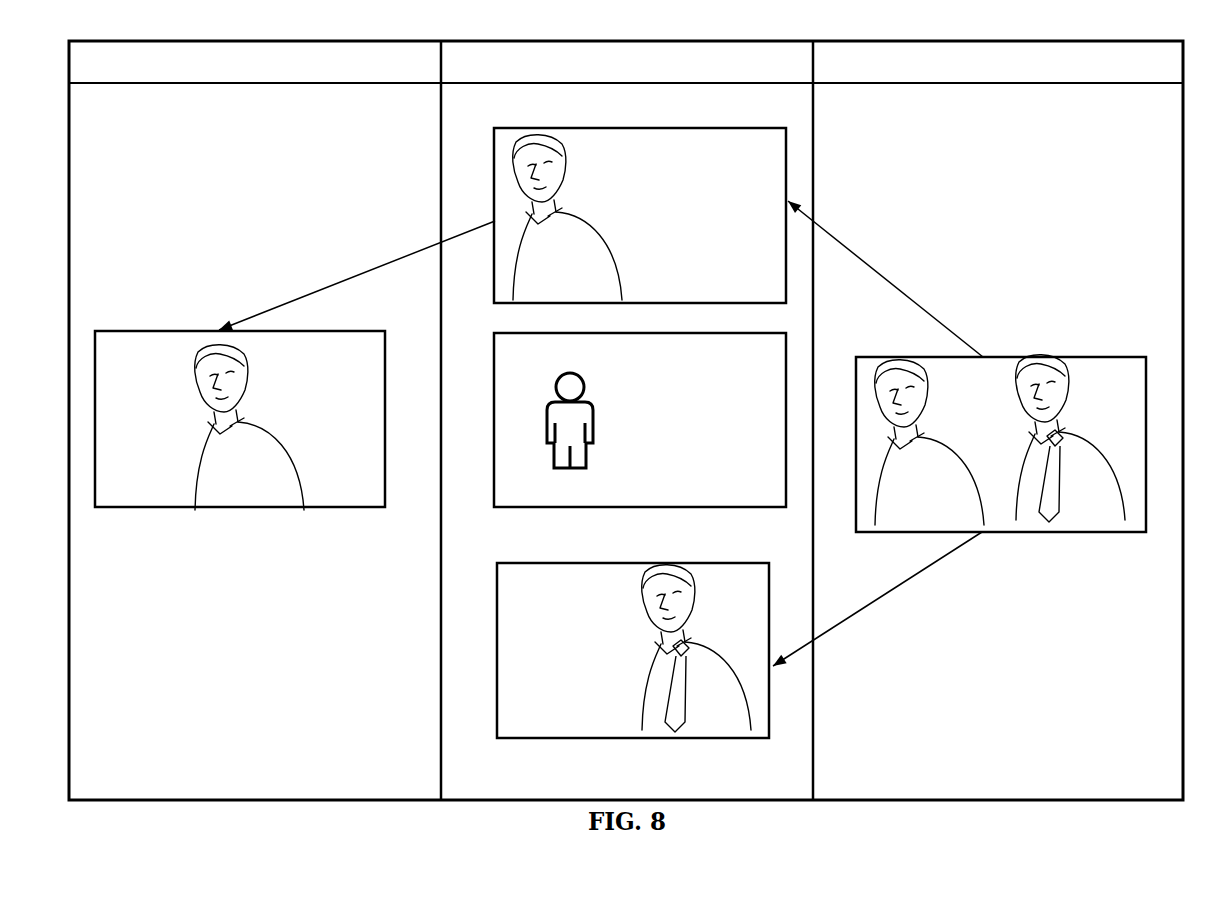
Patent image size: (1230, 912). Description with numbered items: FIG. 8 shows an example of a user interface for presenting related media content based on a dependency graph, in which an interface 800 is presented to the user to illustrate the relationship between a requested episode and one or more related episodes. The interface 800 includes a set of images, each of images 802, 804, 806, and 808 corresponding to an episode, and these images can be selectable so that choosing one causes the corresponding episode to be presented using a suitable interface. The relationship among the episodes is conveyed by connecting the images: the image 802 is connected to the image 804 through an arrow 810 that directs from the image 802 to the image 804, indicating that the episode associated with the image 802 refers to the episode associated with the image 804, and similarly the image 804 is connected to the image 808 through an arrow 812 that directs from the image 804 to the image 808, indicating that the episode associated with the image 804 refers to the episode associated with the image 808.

The interface 800 is at (585, 23).
The image 802 is at (1055, 357).
The image 804 is at (698, 128).
The image 806 is at (712, 563).
The image 808 is at (103, 330).
The arrow 810 is at (884, 277).
The arrow 812 is at (335, 283).